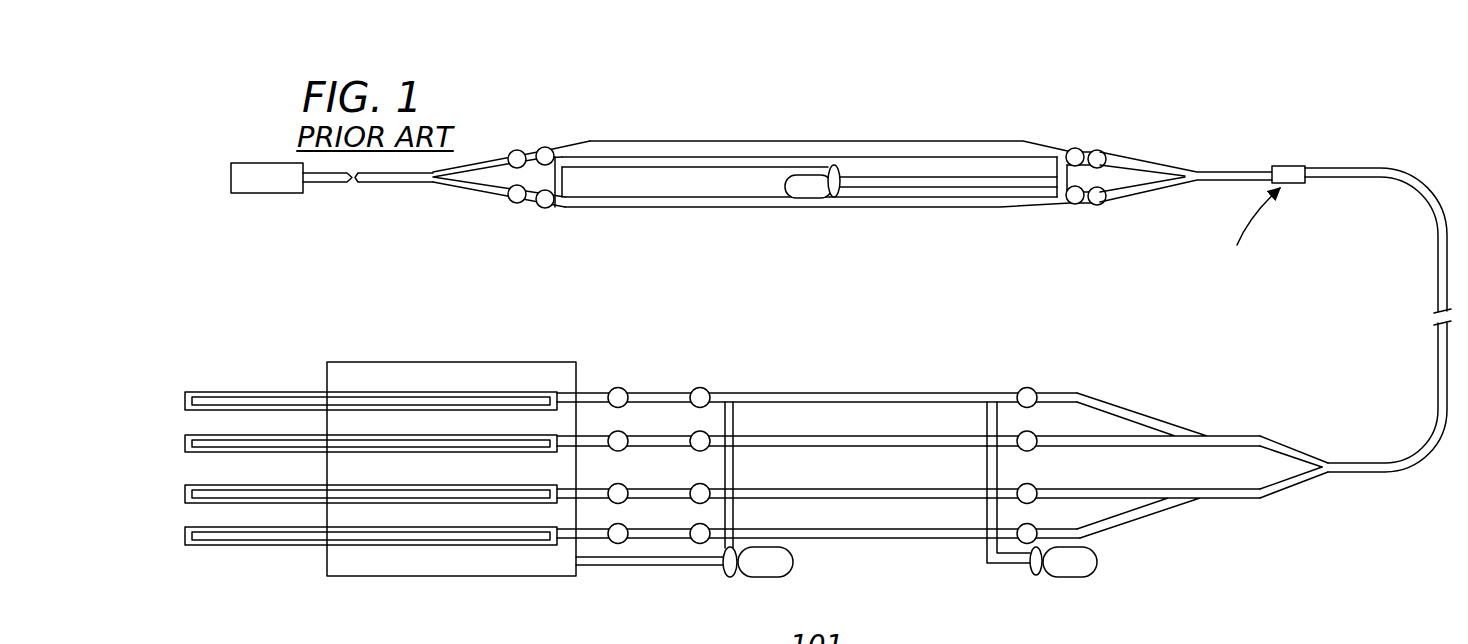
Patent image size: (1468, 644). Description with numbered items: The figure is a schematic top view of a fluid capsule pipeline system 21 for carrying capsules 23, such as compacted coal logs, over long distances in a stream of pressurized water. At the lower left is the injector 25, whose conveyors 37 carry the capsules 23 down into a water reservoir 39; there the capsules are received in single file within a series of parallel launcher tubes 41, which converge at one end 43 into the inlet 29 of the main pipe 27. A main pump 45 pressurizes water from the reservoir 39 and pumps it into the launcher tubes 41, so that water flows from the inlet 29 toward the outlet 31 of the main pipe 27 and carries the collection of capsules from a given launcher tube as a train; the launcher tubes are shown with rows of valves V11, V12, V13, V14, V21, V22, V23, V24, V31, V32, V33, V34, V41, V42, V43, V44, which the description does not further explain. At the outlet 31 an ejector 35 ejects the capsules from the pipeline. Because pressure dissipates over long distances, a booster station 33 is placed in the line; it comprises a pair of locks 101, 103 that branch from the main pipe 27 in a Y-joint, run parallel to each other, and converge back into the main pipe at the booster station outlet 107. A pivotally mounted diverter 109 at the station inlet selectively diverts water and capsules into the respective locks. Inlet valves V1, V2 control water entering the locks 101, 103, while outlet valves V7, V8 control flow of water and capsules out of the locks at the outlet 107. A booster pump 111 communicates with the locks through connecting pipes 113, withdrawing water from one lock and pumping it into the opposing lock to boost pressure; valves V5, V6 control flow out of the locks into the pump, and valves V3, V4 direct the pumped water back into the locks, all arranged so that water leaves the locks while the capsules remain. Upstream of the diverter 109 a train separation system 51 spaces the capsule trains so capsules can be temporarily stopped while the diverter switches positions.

The fluid capsule pipeline system 21 is at (1365, 82).
The capsules 23 is at (1017, 640).
The injector 25 is at (503, 341).
The main pipe 27 is at (1424, 450).
The inlet 29 is at (1326, 474).
The outlet 31 is at (307, 183).
The booster station 33 is at (908, 113).
The ejector 35 is at (240, 195).
The conveyors 37 is at (189, 531).
The reservoir 39 is at (358, 558).
The launcher tubes 41 is at (820, 529).
The converging end 43 is at (1324, 462).
The main pump 45 is at (793, 563).
The train separation system 51 is at (1212, 182).
The lock 101 is at (720, 141).
The lock 103 is at (718, 208).
The outlet of the booster station 107 is at (410, 182).
The diverter 109 is at (1197, 177).
The booster pump 111 is at (795, 175).
The connecting pipes 113 is at (565, 183).
The inlet valve V1 is at (1097, 150).
The inlet valve V2 is at (1095, 206).
The valve V3 is at (1070, 205).
The valve V4 is at (1073, 149).
The valve V5 is at (546, 147).
The valve V6 is at (542, 208).
The outlet valve V7 is at (513, 203).
The outlet valve V8 is at (515, 150).
The valve V11 is at (624, 527).
The valve V12 is at (708, 528).
The valve V13 is at (1035, 526).
The valve V14 is at (949, 515).
The valve V21 is at (624, 487).
The valve V22 is at (708, 488).
The valve V23 is at (1033, 485).
The valve V24 is at (949, 470).
The valve V31 is at (624, 434).
The valve V32 is at (708, 435).
The valve V33 is at (1033, 432).
The valve V34 is at (949, 420).
The valve V41 is at (623, 389).
The valve V42 is at (707, 390).
The valve V43 is at (1027, 387).
The valve V44 is at (953, 375).